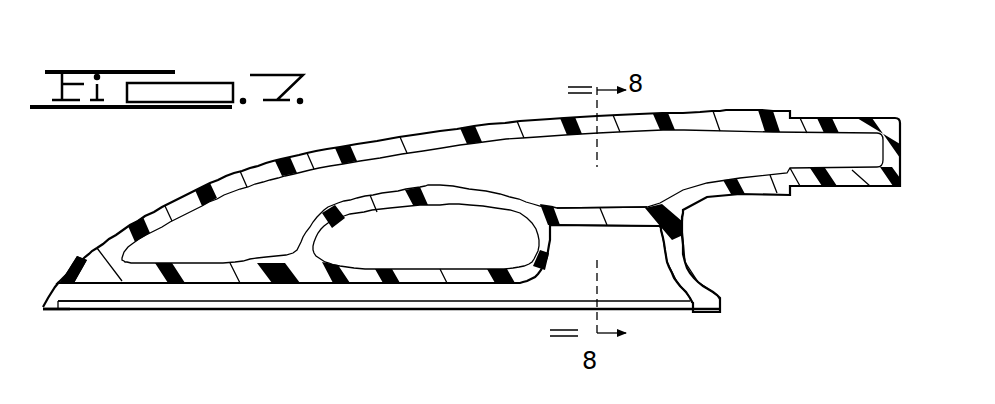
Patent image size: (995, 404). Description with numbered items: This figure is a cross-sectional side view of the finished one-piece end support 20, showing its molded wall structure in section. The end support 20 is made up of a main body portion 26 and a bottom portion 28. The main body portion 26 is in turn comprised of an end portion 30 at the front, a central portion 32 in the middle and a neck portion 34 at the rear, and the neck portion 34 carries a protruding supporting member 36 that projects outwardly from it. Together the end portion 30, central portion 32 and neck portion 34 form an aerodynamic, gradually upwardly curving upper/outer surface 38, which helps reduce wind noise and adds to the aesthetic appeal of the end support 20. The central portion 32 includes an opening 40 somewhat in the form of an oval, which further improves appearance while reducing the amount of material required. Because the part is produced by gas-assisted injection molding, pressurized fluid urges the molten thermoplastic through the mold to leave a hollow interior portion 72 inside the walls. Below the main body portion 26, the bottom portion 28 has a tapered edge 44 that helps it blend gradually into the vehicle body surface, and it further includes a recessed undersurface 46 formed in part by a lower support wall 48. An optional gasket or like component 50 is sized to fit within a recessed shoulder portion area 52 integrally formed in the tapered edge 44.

The end support 20 is at (795, 97).
The main body portion 26 is at (689, 107).
The bottom portion 28 is at (722, 287).
The end portion 30 is at (90, 262).
The central portion 32 is at (542, 116).
The neck portion 34 is at (767, 112).
The protruding supporting member 36 is at (863, 178).
The upper/outer surface 38 is at (488, 131).
The opening 40 is at (450, 247).
The tapered edge 44 is at (722, 305).
The recessed undersurface 46 is at (88, 290).
The lower support wall 48 is at (628, 228).
The gasket 50 is at (398, 303).
The recessed shoulder portion area 52 is at (70, 311).
The hollow interior portion 72 is at (655, 177).